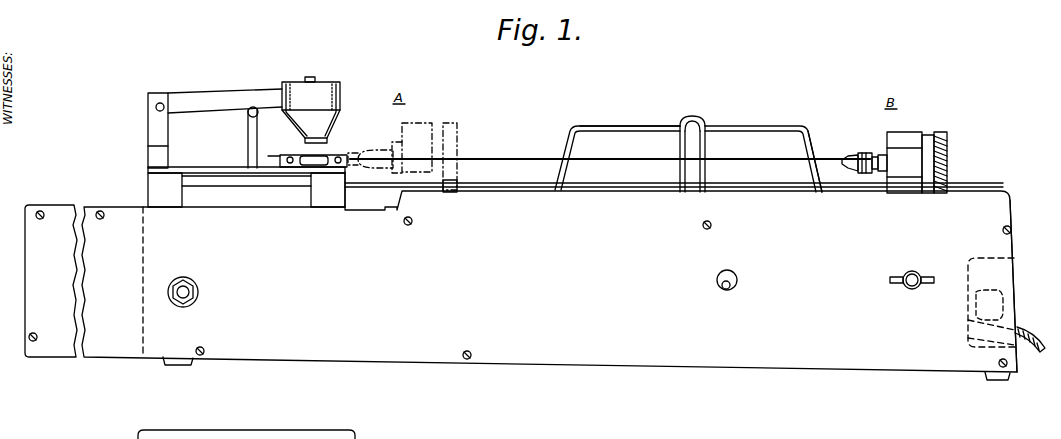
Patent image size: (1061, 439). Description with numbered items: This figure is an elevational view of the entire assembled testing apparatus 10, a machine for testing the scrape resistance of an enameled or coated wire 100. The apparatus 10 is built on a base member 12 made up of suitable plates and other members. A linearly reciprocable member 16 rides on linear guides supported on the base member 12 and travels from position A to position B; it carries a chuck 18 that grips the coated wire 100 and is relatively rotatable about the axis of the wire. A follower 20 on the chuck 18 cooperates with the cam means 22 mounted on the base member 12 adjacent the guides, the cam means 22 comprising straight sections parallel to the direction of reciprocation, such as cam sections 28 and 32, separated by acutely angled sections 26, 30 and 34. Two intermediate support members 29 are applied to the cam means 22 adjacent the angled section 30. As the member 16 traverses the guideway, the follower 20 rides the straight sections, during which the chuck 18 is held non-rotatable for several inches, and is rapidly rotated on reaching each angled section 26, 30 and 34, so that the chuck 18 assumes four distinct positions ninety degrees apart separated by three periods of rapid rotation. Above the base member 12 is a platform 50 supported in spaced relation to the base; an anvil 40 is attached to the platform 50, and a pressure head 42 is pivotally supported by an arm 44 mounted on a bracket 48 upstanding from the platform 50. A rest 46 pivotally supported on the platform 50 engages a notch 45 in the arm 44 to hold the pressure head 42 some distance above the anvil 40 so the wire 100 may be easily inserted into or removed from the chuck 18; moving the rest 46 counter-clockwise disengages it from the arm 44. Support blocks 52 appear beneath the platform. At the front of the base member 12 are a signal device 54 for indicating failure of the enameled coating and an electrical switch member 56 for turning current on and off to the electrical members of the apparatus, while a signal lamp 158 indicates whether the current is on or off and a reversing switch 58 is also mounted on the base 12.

The testing apparatus 10 is at (584, 394).
The base member 12 is at (1012, 243).
The linearly reciprocable member 16 is at (905, 133).
The chuck 18 is at (862, 154).
The follower 20 is at (457, 192).
The cam means 22 is at (704, 124).
The angled section 26 is at (567, 134).
The cam section 28 is at (614, 124).
The intermediate support members 29 is at (672, 143).
The angled section 30 is at (694, 117).
The cam section 32 is at (778, 126).
The angled section 34 is at (808, 143).
The anvil 40 is at (323, 157).
The pressure head 42 is at (342, 95).
The arm 44 is at (245, 90).
The notch 45 is at (254, 107).
The rest 46 is at (247, 133).
The bracket 48 is at (147, 130).
The platform 50 is at (150, 170).
The support blocks 52 is at (153, 186).
The signal device 54 is at (196, 282).
The electrical switch member 56 is at (736, 273).
The reversing switch 58 is at (905, 288).
The enameled or coated wire 100 is at (610, 149).
The signal lamp 158 is at (1004, 300).